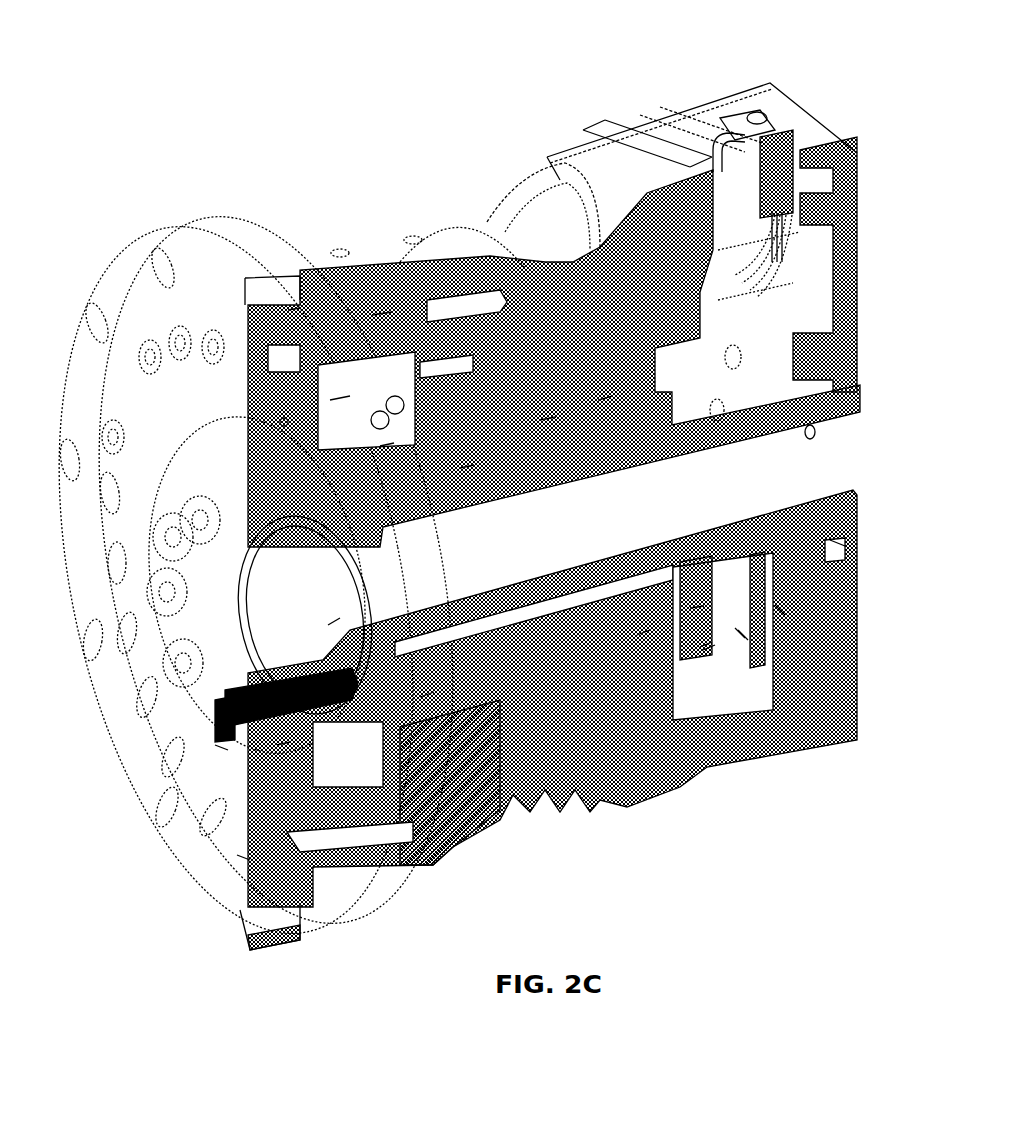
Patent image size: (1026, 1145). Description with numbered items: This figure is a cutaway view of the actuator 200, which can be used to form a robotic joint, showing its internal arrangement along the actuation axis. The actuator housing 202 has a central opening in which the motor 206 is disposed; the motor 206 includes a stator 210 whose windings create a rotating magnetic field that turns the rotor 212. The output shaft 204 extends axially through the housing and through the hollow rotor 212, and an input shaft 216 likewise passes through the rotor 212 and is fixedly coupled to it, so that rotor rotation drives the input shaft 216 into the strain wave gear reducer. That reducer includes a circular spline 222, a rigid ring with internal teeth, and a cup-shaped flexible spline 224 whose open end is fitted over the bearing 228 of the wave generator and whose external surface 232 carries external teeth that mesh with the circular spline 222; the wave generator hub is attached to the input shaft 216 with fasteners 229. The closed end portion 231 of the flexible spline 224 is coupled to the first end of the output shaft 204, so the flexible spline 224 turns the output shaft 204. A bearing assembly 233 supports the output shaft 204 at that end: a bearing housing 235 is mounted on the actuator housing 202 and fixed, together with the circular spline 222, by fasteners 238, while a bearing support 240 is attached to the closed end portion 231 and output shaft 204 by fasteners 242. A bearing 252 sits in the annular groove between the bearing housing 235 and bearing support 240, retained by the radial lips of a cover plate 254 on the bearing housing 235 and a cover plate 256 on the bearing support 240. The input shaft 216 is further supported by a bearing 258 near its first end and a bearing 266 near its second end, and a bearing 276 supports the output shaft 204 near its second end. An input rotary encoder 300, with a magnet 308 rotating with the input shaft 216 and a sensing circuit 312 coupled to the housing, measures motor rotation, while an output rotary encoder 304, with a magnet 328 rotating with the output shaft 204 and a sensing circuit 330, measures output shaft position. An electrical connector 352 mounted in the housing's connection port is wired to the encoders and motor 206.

The actuator 200 is at (490, 85).
The actuator housing 202 is at (553, 205).
The output shaft 204 is at (836, 420).
The motor 206 is at (547, 333).
The stator 210 is at (603, 400).
The rotor 212 is at (548, 420).
The input shaft 216 is at (467, 467).
The circular spline 222 is at (377, 313).
The flexible spline 224 is at (336, 400).
The bearing 228 is at (387, 445).
The fasteners 229 is at (333, 622).
The closed end portion 231 is at (318, 524).
The external surface 232 is at (390, 430).
The bearing assembly 233 is at (176, 232).
The bearing housing 235 is at (363, 857).
The fasteners 238 is at (293, 307).
The bearing support 240 is at (283, 743).
The fasteners 242 is at (215, 705).
The bearing 252 is at (283, 420).
The cover plate 254 is at (242, 857).
The cover plate 256 is at (220, 747).
The bearing 258 is at (427, 695).
The bearing 266 is at (643, 633).
The bearing 276 is at (837, 542).
The input rotary encoder 300 is at (705, 645).
The output rotary encoder 304 is at (740, 633).
The magnet 308 is at (697, 607).
The sensing circuit 312 is at (737, 754).
The magnet 328 is at (780, 610).
The sensing circuit 330 is at (831, 653).
The electrical connector 352 is at (770, 127).